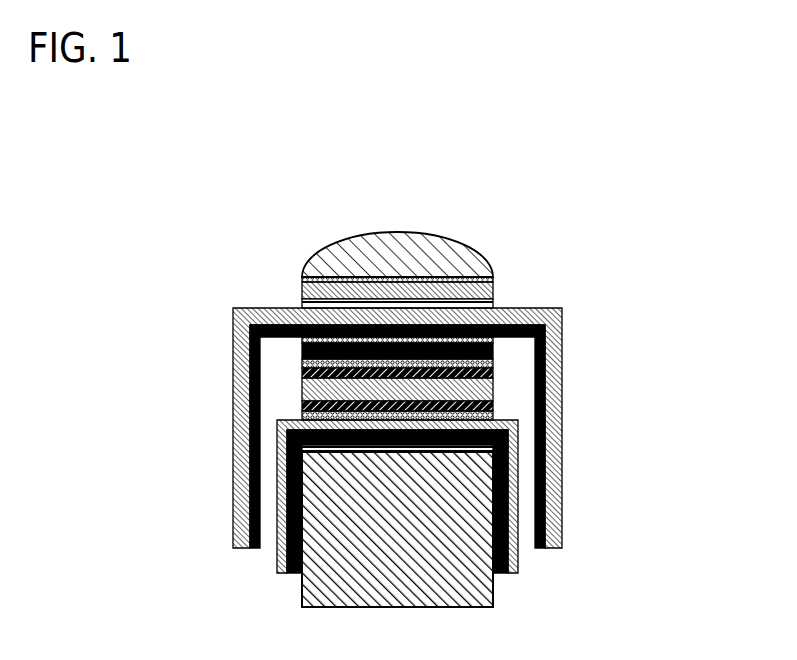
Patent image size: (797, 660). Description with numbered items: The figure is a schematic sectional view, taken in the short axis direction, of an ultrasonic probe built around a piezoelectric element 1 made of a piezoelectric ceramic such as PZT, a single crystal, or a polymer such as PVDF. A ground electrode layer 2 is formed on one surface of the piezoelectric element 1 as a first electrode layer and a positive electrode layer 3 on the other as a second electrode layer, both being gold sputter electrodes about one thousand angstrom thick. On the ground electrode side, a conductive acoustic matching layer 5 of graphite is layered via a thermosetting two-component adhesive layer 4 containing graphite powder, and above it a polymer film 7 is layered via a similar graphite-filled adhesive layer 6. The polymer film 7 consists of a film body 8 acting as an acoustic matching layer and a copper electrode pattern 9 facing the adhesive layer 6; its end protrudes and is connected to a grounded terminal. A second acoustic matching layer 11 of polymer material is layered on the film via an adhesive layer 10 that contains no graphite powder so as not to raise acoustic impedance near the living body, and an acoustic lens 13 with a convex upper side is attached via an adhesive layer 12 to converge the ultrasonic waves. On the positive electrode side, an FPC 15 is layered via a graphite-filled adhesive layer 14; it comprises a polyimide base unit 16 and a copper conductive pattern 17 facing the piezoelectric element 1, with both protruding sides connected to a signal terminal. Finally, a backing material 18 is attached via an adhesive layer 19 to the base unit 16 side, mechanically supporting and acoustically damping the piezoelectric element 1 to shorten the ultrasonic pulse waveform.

The piezoelectric element 1 is at (493, 383).
The ground electrode layer 2 is at (493, 371).
The positive electrode layer 3 is at (493, 409).
The adhesive layer 4 is at (303, 366).
The conductive acoustic matching layer 5 is at (303, 350).
The adhesive layer 6 is at (233, 309).
The polymer film 7 is at (296, 428).
The film body 8 is at (242, 400).
The electrode pattern 9 is at (255, 423).
The adhesive layer 10 is at (493, 303).
The second acoustic matching layer 11 is at (493, 292).
The adhesive layer 12 is at (493, 280).
The acoustic lens 13 is at (483, 246).
The adhesive layer 14 is at (493, 413).
The FPC 15 is at (521, 496).
The base unit 16 is at (500, 480).
The conductive pattern 17 is at (513, 497).
The backing material 18 is at (320, 545).
The adhesive layer 19 is at (320, 449).